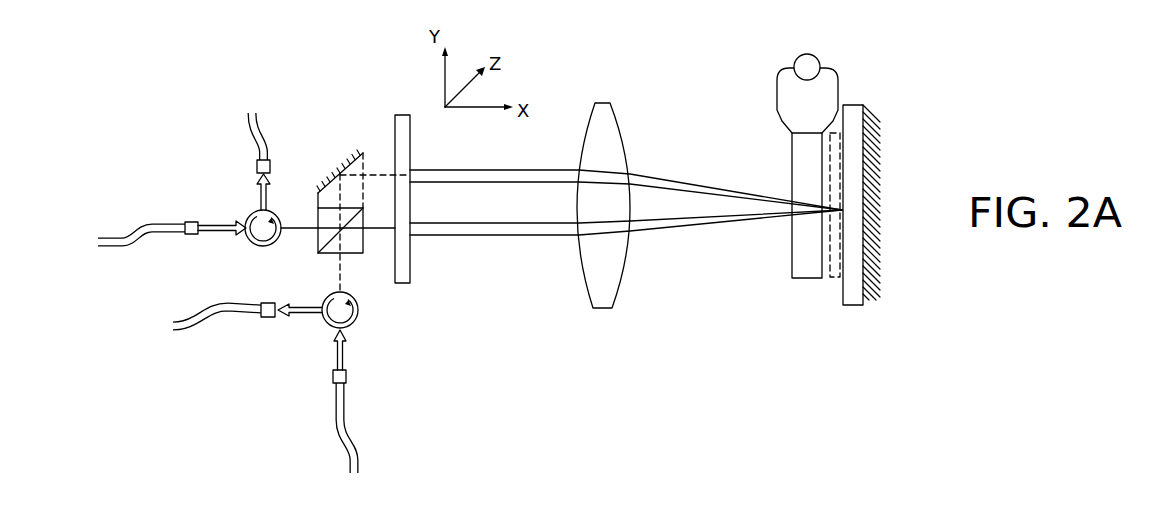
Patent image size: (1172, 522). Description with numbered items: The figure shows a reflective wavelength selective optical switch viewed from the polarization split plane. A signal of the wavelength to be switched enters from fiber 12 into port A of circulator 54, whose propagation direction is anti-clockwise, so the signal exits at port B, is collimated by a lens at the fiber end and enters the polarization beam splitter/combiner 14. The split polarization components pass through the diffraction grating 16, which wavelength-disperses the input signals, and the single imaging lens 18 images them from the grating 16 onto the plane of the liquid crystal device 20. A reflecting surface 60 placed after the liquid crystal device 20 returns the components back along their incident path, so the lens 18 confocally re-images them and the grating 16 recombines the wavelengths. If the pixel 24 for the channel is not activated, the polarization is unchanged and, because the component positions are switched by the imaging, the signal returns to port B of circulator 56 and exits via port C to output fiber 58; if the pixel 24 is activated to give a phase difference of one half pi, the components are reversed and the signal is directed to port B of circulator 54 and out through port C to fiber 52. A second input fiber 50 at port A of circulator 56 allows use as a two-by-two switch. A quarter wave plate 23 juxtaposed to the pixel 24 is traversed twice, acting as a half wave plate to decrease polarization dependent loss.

The fiber 12 is at (145, 236).
The polarization beam splitter/combiner 14 is at (308, 263).
The diffraction grating 16 is at (405, 285).
The imaging lens 18 is at (618, 291).
The liquid crystal device 20 is at (793, 207).
The quarter wave plate 23 is at (835, 278).
The pixel 24 is at (792, 253).
The second input fiber 50 is at (341, 400).
The fiber 52 is at (247, 128).
The circulator 54 is at (250, 209).
The circulator 56 is at (328, 325).
The output fiber 58 is at (208, 330).
The reflecting surface 60 is at (852, 306).